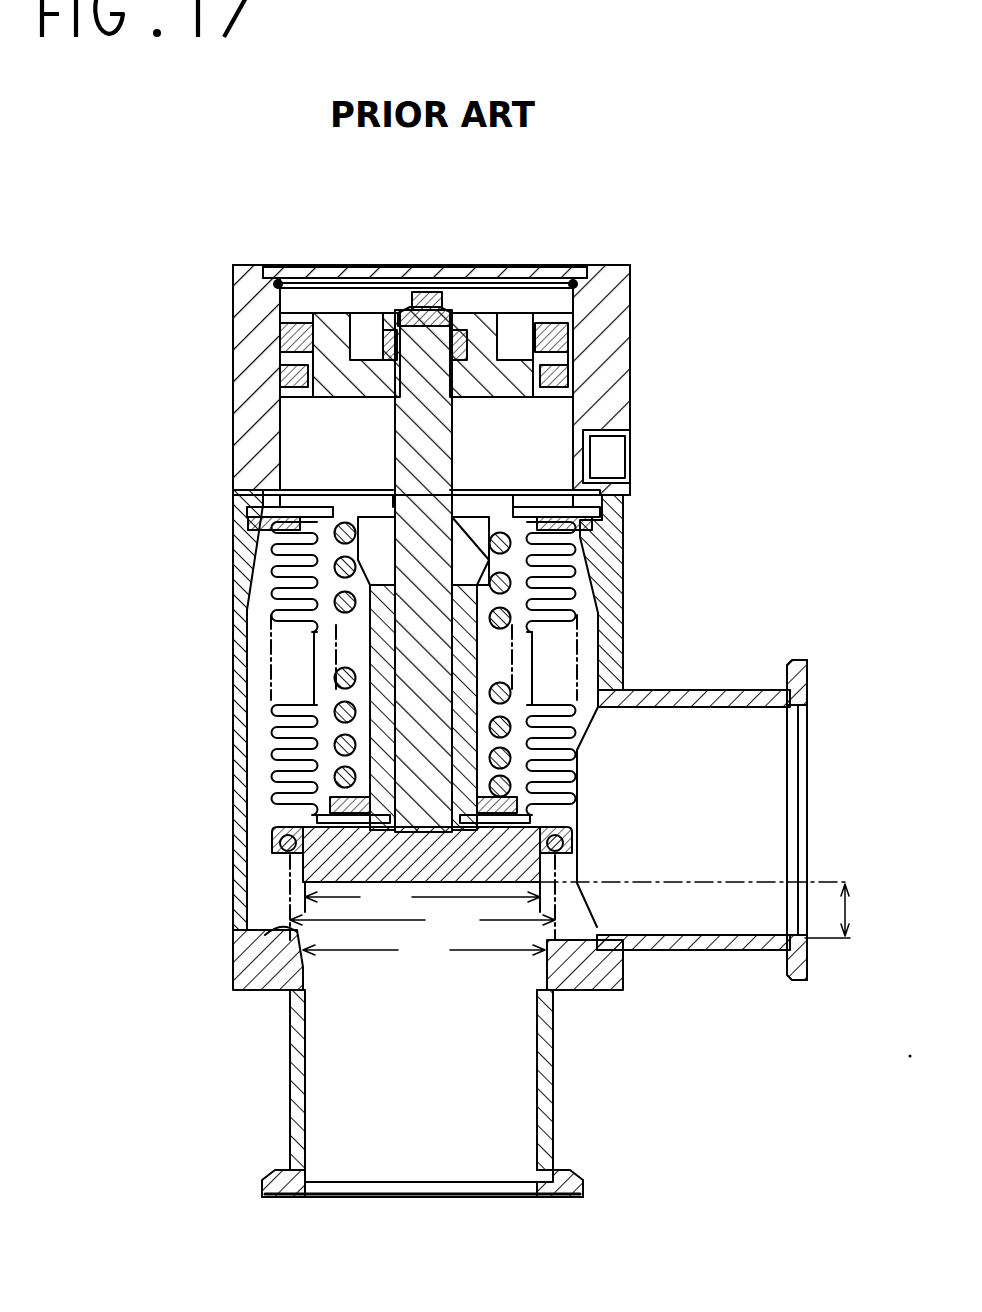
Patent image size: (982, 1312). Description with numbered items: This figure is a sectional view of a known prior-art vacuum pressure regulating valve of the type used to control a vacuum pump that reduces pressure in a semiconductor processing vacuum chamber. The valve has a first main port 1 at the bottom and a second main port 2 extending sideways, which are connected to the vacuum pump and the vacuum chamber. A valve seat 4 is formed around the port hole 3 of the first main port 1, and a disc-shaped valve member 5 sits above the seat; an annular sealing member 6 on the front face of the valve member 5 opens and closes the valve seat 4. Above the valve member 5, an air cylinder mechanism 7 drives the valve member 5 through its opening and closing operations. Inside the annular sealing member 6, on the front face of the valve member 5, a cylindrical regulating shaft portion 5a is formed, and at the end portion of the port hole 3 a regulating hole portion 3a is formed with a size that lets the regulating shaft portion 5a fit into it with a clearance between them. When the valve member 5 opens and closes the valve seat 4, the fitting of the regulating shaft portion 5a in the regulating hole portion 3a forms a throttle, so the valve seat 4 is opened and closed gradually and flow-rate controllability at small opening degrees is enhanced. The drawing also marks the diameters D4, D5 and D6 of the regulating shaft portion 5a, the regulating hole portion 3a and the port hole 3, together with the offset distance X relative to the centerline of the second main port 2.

The air cylinder mechanism 7 is at (512, 241).
The valve member 5 is at (293, 825).
The regulating shaft portion 5a is at (547, 877).
The annular sealing member 6 is at (285, 855).
The valve seat 4 is at (277, 932).
The port hole 3 is at (360, 1033).
The regulating hole portion 3a is at (492, 963).
The second main port 2 is at (768, 784).
The first main port 1 is at (434, 1170).
The diameter D4 is at (422, 901).
The diameter D5 is at (424, 956).
The diameter D6 is at (422, 922).
The offset distance X is at (701, 910).